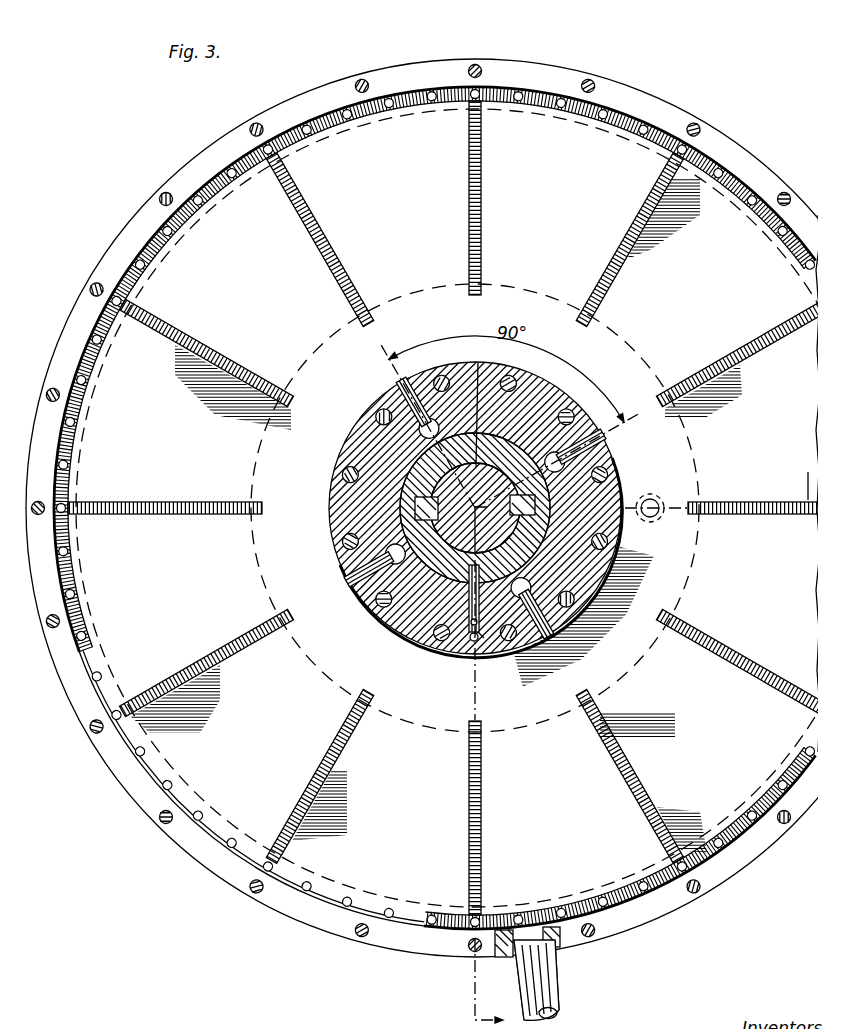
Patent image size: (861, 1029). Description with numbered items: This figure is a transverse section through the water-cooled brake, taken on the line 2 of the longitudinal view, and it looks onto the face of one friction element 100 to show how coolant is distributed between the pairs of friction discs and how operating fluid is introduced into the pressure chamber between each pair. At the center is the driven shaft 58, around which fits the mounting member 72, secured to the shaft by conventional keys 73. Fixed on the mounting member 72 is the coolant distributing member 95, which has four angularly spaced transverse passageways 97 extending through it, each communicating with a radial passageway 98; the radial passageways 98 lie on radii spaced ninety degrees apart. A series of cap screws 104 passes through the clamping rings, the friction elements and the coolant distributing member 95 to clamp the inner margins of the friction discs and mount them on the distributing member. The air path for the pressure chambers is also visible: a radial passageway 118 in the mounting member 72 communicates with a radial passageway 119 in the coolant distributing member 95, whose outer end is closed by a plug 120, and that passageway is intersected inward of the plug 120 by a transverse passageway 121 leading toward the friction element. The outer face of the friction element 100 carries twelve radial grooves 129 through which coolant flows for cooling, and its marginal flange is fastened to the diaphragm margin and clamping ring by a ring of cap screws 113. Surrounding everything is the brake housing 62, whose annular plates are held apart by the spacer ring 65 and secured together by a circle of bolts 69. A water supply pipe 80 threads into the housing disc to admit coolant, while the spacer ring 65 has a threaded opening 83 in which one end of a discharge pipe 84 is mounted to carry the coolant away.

The section line 2- 2 is at (641, 747).
The driven shaft 58 is at (478, 400).
The brake housing 62 is at (183, 167).
The spacer ring 65 is at (147, 808).
The bolts 69 is at (255, 124).
The mounting member 72 is at (428, 560).
The keys 73 is at (415, 508).
The water supply pipe 80 is at (651, 494).
The threaded opening 83 is at (556, 952).
The discharge pipe 84 is at (559, 990).
The coolant distributing member 95 is at (347, 443).
The transverse passageways 97 is at (419, 425).
The radial passageways 98 is at (396, 392).
The friction element 100 is at (230, 813).
The cap screws 104 is at (511, 378).
The cap screws 113 is at (199, 206).
The radial passageway 118 is at (484, 635).
The radial passageway 119 is at (471, 626).
The plug 120 is at (482, 640).
The transverse passageway 121 is at (472, 642).
The radial grooves 129 is at (632, 250).